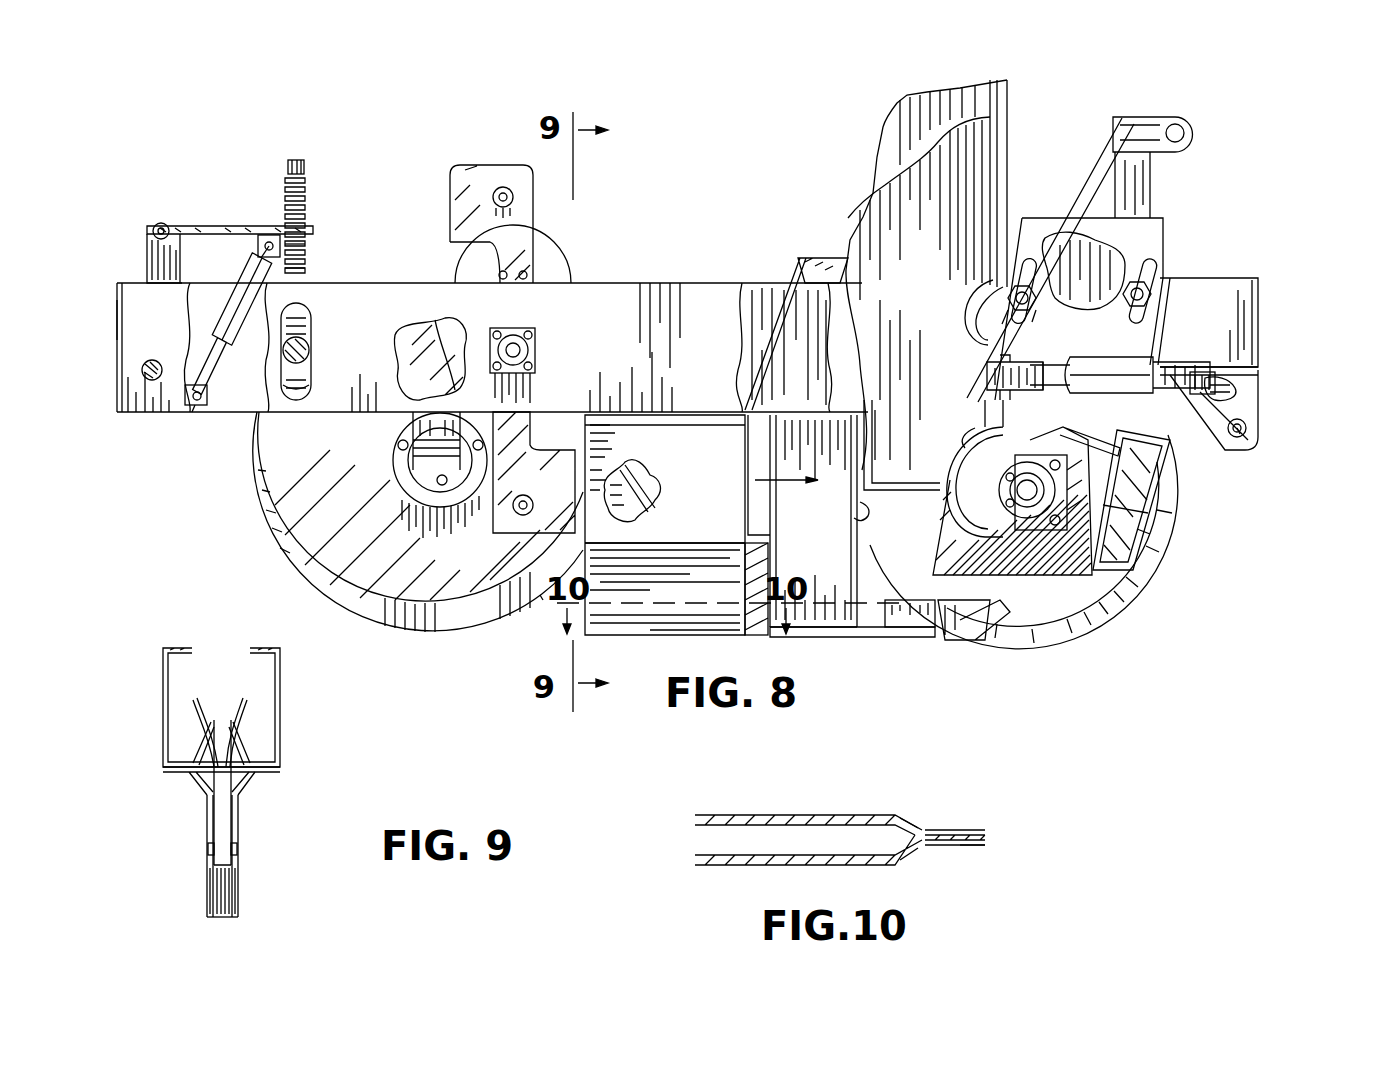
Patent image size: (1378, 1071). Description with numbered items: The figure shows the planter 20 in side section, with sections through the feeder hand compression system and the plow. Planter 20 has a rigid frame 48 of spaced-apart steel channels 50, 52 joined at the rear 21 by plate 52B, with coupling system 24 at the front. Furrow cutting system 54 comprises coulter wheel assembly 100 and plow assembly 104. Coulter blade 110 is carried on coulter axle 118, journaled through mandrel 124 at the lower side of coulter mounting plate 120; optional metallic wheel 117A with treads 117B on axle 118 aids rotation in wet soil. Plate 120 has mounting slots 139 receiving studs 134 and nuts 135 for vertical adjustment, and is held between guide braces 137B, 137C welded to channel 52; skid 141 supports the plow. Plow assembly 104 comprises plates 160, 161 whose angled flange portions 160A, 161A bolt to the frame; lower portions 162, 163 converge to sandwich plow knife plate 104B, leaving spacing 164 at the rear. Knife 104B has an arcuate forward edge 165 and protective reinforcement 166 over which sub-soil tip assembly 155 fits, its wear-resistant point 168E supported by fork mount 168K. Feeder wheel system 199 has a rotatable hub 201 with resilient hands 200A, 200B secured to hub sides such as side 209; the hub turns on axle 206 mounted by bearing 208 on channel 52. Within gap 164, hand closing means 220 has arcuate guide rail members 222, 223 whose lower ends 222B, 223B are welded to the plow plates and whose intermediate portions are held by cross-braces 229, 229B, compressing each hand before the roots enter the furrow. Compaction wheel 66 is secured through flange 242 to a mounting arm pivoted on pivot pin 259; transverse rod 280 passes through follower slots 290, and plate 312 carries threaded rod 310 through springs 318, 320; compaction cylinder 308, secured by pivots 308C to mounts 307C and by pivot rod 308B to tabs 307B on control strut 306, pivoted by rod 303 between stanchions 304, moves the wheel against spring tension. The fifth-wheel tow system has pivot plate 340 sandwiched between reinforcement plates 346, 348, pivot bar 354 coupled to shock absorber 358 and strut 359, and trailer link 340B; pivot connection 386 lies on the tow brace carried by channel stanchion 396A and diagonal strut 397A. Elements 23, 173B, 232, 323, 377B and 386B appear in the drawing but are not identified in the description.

In FIG. 8, the planter 20 is at (692, 119).
In FIG. 8, the rear of the planter 21 is at (133, 499).
In FIG. 8, the right side 23 is at (1290, 498).
In FIG. 8, the coupling system 24 is at (1219, 120).
In FIG. 8, the frame 48 is at (701, 276).
In FIG. 9, the channel 50 is at (162, 702).
In FIG. 8, the channel 52 is at (596, 344).
In FIG. 9, the channel 52 is at (280, 685).
In FIG. 8, the plate 52B is at (115, 307).
In FIG. 8, the furrow cutting system 54 is at (882, 484).
In FIG. 8, the wheel 66 is at (277, 531).
In FIG. 8, the coulter wheel assembly 100 is at (1057, 633).
In FIG. 8, the plow assembly 104 is at (660, 638).
In FIG. 9, the plow assembly 104 is at (174, 922).
In FIG. 8, the plow knife plate 104B is at (854, 458).
In FIG. 9, the plow knife plate 104B is at (222, 917).
In FIG. 10, the plow knife plate 104B is at (990, 836).
In FIG. 8, the coulter blade 110 is at (1100, 601).
In FIG. 8, the metallic wheel 117A is at (993, 482).
In FIG. 8, the treads 117B is at (990, 430).
In FIG. 8, the coulter axle 118 is at (1030, 475).
In FIG. 8, the coulter mounting plate 120 is at (1160, 228).
In FIG. 8, the mandrel 124 is at (1009, 542).
In FIG. 8, the studs 134 is at (1030, 314).
In FIG. 8, the nuts 135 is at (1007, 320).
In FIG. 8, the guide brace 137B is at (1175, 295).
In FIG. 8, the guide brace 137C is at (979, 302).
In FIG. 8, the mounting slots 139 is at (1160, 261).
In FIG. 8, the skid 141 is at (1140, 546).
In FIG. 8, the sub-soil tip assembly 155 is at (886, 642).
In FIG. 9, the plate 160 is at (207, 887).
In FIG. 10, the plate 160 is at (840, 812).
In FIG. 9, the upper angled flange portion 160A is at (190, 773).
In FIG. 8, the plate 161 is at (679, 597).
In FIG. 9, the plate 161 is at (237, 887).
In FIG. 10, the plate 161 is at (850, 865).
In FIG. 8, the upper angled flange portion 161A is at (643, 419).
In FIG. 9, the upper angled flange portion 161A is at (252, 775).
In FIG. 10, the lower portion 162 is at (905, 826).
In FIG. 8, the lower portion 163 is at (753, 634).
In FIG. 10, the lower portion 163 is at (900, 847).
In FIG. 9, the spacing 164 is at (225, 825).
In FIG. 10, the spacing 164 is at (795, 846).
In FIG. 8, the forward edge 165 is at (865, 510).
In FIG. 8, the protective reinforcement 166 is at (842, 631).
In FIG. 10, the protective reinforcement 166 is at (985, 848).
In FIG. 8, the point 168E is at (950, 652).
In FIG. 8, the fork mount 168K is at (860, 614).
In FIG. 8, the body 173B is at (962, 232).
In FIG. 8, the feeder wheel system 199 is at (560, 256).
In FIG. 8, the hand 200A is at (475, 173).
In FIG. 8, the hand 200B is at (502, 535).
In FIG. 8, the rotatable hub 201 is at (570, 269).
In FIG. 8, the axle 206 is at (513, 350).
In FIG. 8, the bearing 208 is at (520, 328).
In FIG. 8, the side of hub 209 is at (432, 325).
In FIG. 9, the hand closing means 220 is at (225, 728).
In FIG. 10, the hand closing means 220 is at (740, 834).
In FIG. 9, the guide rail member 222 is at (196, 700).
In FIG. 9, the lowermost rail end 222B is at (207, 850).
In FIG. 8, the guide rail member 223 is at (645, 502).
In FIG. 9, the guide rail member 223 is at (235, 700).
In FIG. 9, the lowermost rail end 223B is at (238, 850).
In FIG. 9, the cross-brace 229 is at (195, 737).
In FIG. 9, the cross-brace 229B is at (250, 735).
In FIG. 8, the disk rim 232 is at (543, 595).
In FIG. 8, the flange 242 is at (404, 467).
In FIG. 8, the pivot pin 259 is at (140, 370).
In FIG. 8, the transverse rod 280 is at (305, 349).
In FIG. 8, the follower slot 290 is at (303, 384).
In FIG. 8, the rod 303 is at (160, 226).
In FIG. 8, the vertical stanchion 304 is at (148, 270).
In FIG. 8, the control strut 306 is at (225, 225).
In FIG. 8, the tab 307B is at (258, 245).
In FIG. 8, the mount 307C is at (180, 423).
In FIG. 8, the compaction cylinder 308 is at (230, 316).
In FIG. 8, the pivot rod 308B is at (268, 237).
In FIG. 8, the pivot 308C is at (195, 405).
In FIG. 8, the threaded rod 310 is at (305, 268).
In FIG. 8, the plate 312 is at (308, 333).
In FIG. 8, the spring 318 is at (305, 247).
In FIG. 8, the spring 320 is at (303, 186).
In FIG. 8, the nut 323 is at (303, 170).
In FIG. 8, the pivot plate 340 is at (1255, 373).
In FIG. 8, the trailer link 340B is at (1235, 423).
In FIG. 8, the reinforcement plate 346 is at (1243, 398).
In FIG. 8, the reinforcement plate 348 is at (1260, 365).
In FIG. 8, the pivot bar 354 is at (1180, 405).
In FIG. 8, the shock absorber 358 is at (1120, 374).
In FIG. 8, the strut 359 is at (987, 378).
In FIG. 8, the pin 377B is at (1240, 433).
In FIG. 8, the pivot connection 386 is at (1120, 118).
In FIG. 8, the link hole 386B is at (1175, 123).
In FIG. 8, the channel stanchion 396A is at (1150, 178).
In FIG. 8, the diagonal strut 397A is at (1105, 153).